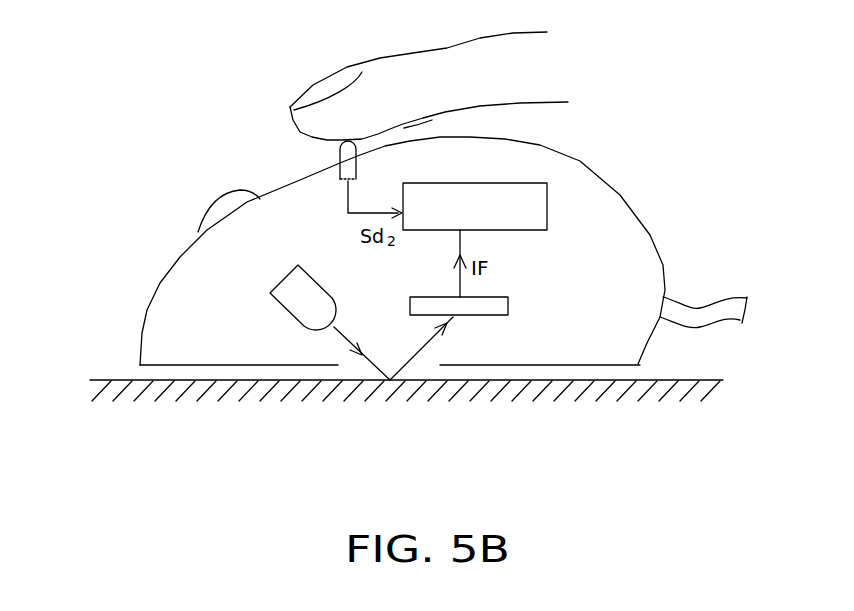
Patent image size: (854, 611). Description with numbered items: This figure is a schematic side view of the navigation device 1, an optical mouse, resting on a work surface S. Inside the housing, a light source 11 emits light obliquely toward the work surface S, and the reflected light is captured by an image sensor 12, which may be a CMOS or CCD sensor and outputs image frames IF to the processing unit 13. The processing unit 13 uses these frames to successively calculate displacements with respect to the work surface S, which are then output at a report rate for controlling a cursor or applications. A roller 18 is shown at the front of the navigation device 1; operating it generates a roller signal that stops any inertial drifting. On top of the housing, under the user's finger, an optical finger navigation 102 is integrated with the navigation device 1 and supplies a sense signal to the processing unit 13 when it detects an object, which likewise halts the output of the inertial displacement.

The navigation device 1 is at (593, 168).
The light source 11 is at (286, 312).
The image sensor 12 is at (483, 316).
The processing unit 13 is at (547, 193).
The roller 18 is at (220, 210).
The optical finger navigation 102 is at (340, 152).
The work surface S is at (108, 380).